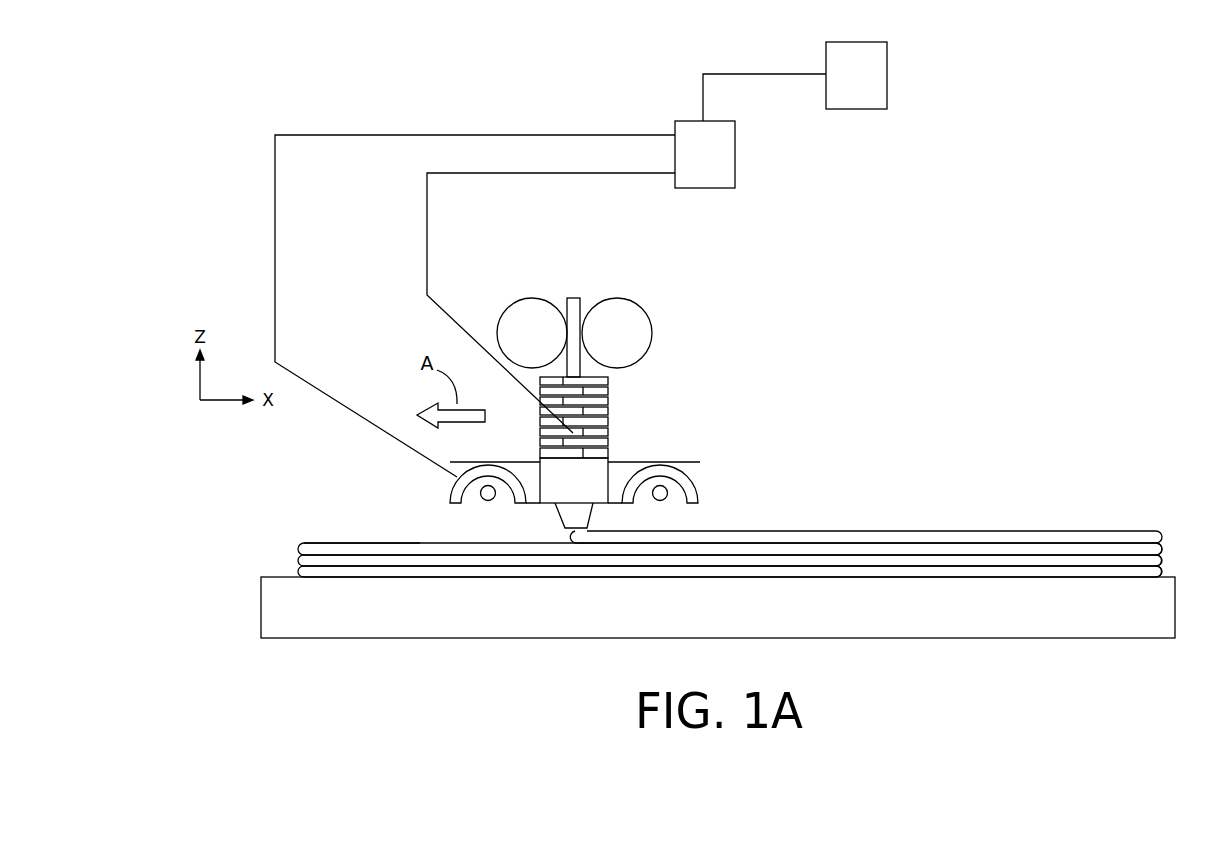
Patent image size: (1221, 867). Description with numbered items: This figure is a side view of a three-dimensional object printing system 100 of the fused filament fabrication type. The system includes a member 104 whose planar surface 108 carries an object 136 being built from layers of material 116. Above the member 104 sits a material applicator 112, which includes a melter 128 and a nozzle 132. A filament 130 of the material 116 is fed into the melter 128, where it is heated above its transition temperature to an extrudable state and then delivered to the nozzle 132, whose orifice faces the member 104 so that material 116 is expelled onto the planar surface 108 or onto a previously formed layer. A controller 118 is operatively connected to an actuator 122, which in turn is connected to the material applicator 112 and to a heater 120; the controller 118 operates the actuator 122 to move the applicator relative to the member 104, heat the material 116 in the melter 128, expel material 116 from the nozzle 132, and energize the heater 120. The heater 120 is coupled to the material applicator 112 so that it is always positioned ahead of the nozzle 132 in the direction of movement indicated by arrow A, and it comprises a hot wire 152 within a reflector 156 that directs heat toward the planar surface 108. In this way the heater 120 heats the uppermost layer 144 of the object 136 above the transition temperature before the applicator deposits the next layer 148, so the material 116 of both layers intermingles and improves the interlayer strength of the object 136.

The three-dimensional object printing system 100 is at (855, 272).
The member 104 is at (838, 627).
The planar surface 108 is at (277, 577).
The material applicator 112 is at (638, 415).
The material 116 is at (577, 300).
The controller 118 is at (887, 75).
The heater 120 is at (675, 452).
The actuator 122 is at (735, 153).
The melter 128 is at (595, 472).
The filament 130 is at (567, 312).
The nozzle 132 is at (572, 531).
The object 136 is at (1152, 521).
The uppermost layer 144 is at (418, 543).
The next layer 148 is at (775, 533).
The hot wire 152 is at (666, 489).
The reflector 156 is at (698, 500).